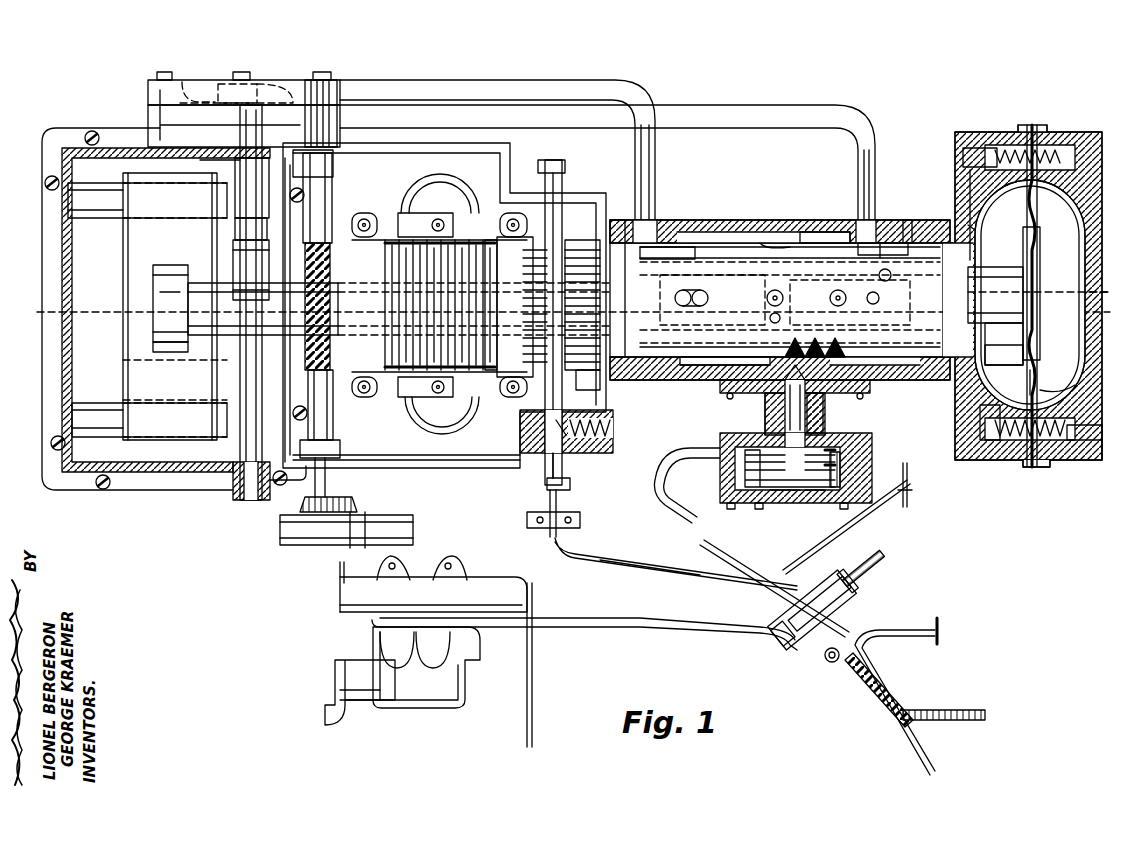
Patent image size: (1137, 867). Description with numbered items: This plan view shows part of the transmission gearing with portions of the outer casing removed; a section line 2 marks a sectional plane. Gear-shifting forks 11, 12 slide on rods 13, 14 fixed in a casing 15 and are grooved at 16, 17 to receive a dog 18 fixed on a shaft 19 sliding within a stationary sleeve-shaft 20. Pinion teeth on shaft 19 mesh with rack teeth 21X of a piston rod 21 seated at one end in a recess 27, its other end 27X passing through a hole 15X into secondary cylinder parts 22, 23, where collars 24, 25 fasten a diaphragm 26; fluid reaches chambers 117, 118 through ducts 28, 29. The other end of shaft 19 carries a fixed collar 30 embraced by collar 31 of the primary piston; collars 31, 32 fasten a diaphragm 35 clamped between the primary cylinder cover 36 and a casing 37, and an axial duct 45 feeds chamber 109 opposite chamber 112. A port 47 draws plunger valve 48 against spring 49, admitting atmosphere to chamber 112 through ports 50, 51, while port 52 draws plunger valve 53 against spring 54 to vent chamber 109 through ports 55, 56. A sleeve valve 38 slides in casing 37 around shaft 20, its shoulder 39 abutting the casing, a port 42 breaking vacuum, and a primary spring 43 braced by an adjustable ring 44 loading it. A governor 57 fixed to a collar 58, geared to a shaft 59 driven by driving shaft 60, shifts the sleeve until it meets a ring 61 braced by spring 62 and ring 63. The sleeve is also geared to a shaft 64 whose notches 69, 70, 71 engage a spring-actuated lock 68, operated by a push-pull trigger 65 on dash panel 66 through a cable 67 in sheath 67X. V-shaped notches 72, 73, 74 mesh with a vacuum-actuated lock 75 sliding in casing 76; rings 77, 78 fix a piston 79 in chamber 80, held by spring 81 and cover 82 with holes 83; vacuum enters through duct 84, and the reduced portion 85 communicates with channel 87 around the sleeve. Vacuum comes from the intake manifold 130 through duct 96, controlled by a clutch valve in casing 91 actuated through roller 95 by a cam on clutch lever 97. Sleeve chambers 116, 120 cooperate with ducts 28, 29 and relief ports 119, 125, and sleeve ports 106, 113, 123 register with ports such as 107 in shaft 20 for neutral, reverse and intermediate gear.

The section line 2 is at (37, 296).
The gear-shifting fork 11 is at (135, 246).
The gear-shifting fork 12 is at (137, 372).
The rod 13 is at (100, 178).
The rod 14 is at (110, 415).
The casing 15 is at (62, 252).
The hole 15X is at (235, 156).
The groove 16 is at (220, 258).
The groove 17 is at (182, 352).
The dog 18 is at (160, 296).
The shaft 19 is at (232, 318).
The stationary sleeve-shaft 20 is at (485, 310).
The piston rod 21 is at (244, 452).
The rack teeth 21X is at (238, 262).
The secondary piston cylinder 22 is at (170, 118).
The secondary piston cylinder cover 23 is at (148, 92).
The collar 24 is at (224, 85).
The collar 25 is at (265, 88).
The flexible diaphragm 26 is at (200, 85).
The socket or recess 27 is at (246, 500).
The piston rod end 27X is at (252, 150).
The duct 28 is at (455, 88).
The duct 29 is at (735, 96).
The fixed collar 30 is at (1020, 275).
The collar 31 is at (1025, 345).
The collar 32 is at (1040, 335).
The flexible diaphragm 35 is at (1034, 385).
The primary cylinder cover 36 is at (1090, 278).
The casing 37 is at (500, 468).
The sleeve valve 38 is at (730, 245).
The shoulder 39 is at (600, 352).
The port 42 is at (1103, 297).
The primary spring 43 is at (492, 235).
The ring 44 is at (364, 218).
The axial duct 45 is at (1040, 300).
The port 47 is at (1092, 148).
The plunger valve 48 is at (990, 150).
The spring 49 is at (1058, 140).
The port 50 is at (963, 160).
The port 51 is at (968, 182).
The port 52 is at (985, 420).
The plunger valve 53 is at (1080, 440).
The spring 54 is at (1045, 467).
The port 55 is at (1104, 445).
The port 56 is at (1068, 392).
The governor 57 is at (408, 212).
The collar 58 is at (333, 215).
The shaft 59 is at (333, 398).
The driving shaft 60 is at (400, 528).
The ring 61 is at (478, 395).
The spring 62 is at (402, 387).
The ring 63 is at (439, 292).
The shaft 64 is at (562, 175).
The push-pull trigger 65 is at (910, 480).
The dash panel 66 is at (908, 507).
The cable 67 is at (553, 540).
The sheath 67X is at (655, 562).
The spring actuated lock 68 is at (545, 432).
The notch 69 is at (565, 455).
The notch 70 is at (548, 460).
The notch 71 is at (587, 382).
The V-shaped notch 72 is at (798, 338).
The V-shaped notch 73 is at (817, 338).
The V-shaped notch 74 is at (838, 338).
The vacuum actuated lock 75 is at (770, 395).
The casing 76 is at (772, 415).
The ring 77 is at (860, 470).
The ring 78 is at (778, 500).
The piston 79 is at (812, 500).
The chamber 80 is at (862, 445).
The spring 81 is at (852, 447).
The chamber cover 82 is at (733, 505).
The holes 83 is at (760, 505).
The duct 84 is at (700, 448).
The reduced diameter portion 85 is at (823, 410).
The channel 87 is at (818, 240).
The clutch valve casing 91 is at (810, 645).
The roller 95 is at (830, 663).
The duct 96 is at (614, 620).
The clutch lever 97 is at (940, 632).
The port 106 is at (700, 298).
The port 107 is at (675, 298).
The chamber 109 is at (1040, 365).
The chamber 112 is at (1000, 260).
The port 113 is at (770, 318).
The chamber 116 is at (682, 250).
The chamber 117 is at (300, 75).
The chamber 118 is at (160, 130).
The relief port 119 is at (905, 250).
The chamber 120 is at (888, 220).
The port 123 is at (790, 247).
The relief port 125 is at (633, 218).
The intake manifold 130 is at (475, 660).